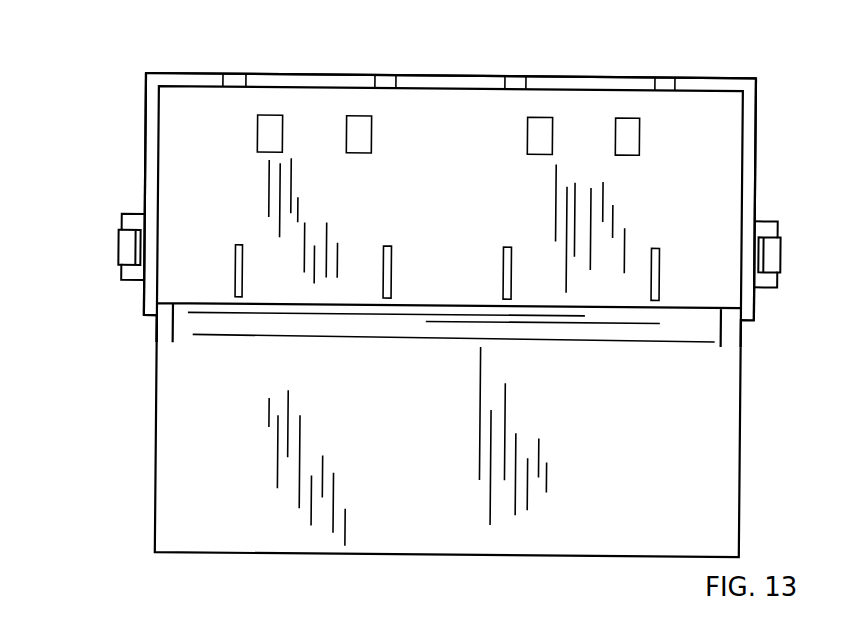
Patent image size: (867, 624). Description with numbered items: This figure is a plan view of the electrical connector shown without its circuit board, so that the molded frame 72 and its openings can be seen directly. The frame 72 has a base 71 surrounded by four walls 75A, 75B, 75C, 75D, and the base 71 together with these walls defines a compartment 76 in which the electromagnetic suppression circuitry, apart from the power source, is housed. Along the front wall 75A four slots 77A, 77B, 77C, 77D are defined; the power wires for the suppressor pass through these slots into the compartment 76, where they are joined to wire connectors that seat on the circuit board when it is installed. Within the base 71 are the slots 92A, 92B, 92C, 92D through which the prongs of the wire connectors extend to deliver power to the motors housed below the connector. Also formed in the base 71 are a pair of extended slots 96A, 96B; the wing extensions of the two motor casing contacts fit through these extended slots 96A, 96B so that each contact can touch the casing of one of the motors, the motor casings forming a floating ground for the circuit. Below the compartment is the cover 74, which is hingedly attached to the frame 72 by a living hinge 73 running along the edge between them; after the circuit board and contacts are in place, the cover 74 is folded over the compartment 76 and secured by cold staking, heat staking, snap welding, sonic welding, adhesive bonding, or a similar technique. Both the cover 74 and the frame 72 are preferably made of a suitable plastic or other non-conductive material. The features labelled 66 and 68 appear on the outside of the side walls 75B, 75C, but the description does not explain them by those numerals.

The frame 72 is at (122, 62).
The base 71 is at (447, 195).
The living hinge 73 is at (715, 322).
The cover 74 is at (743, 407).
The front wall 75A is at (316, 83).
The wall 75B is at (152, 117).
The wall 75C is at (750, 121).
The wall 75D is at (158, 315).
The compartment 76 is at (473, 155).
The slot 77A is at (667, 74).
The slot 77B is at (517, 75).
The slot 77C is at (387, 75).
The slot 77D is at (236, 73).
The mounting bracket 66 is at (137, 213).
The mounting block 68 is at (118, 243).
The slot 92A is at (662, 249).
The slot 92B is at (514, 250).
The slot 92C is at (394, 248).
The slot 92D is at (245, 248).
The extended slot 96A is at (373, 122).
The extended slot 96B is at (284, 122).